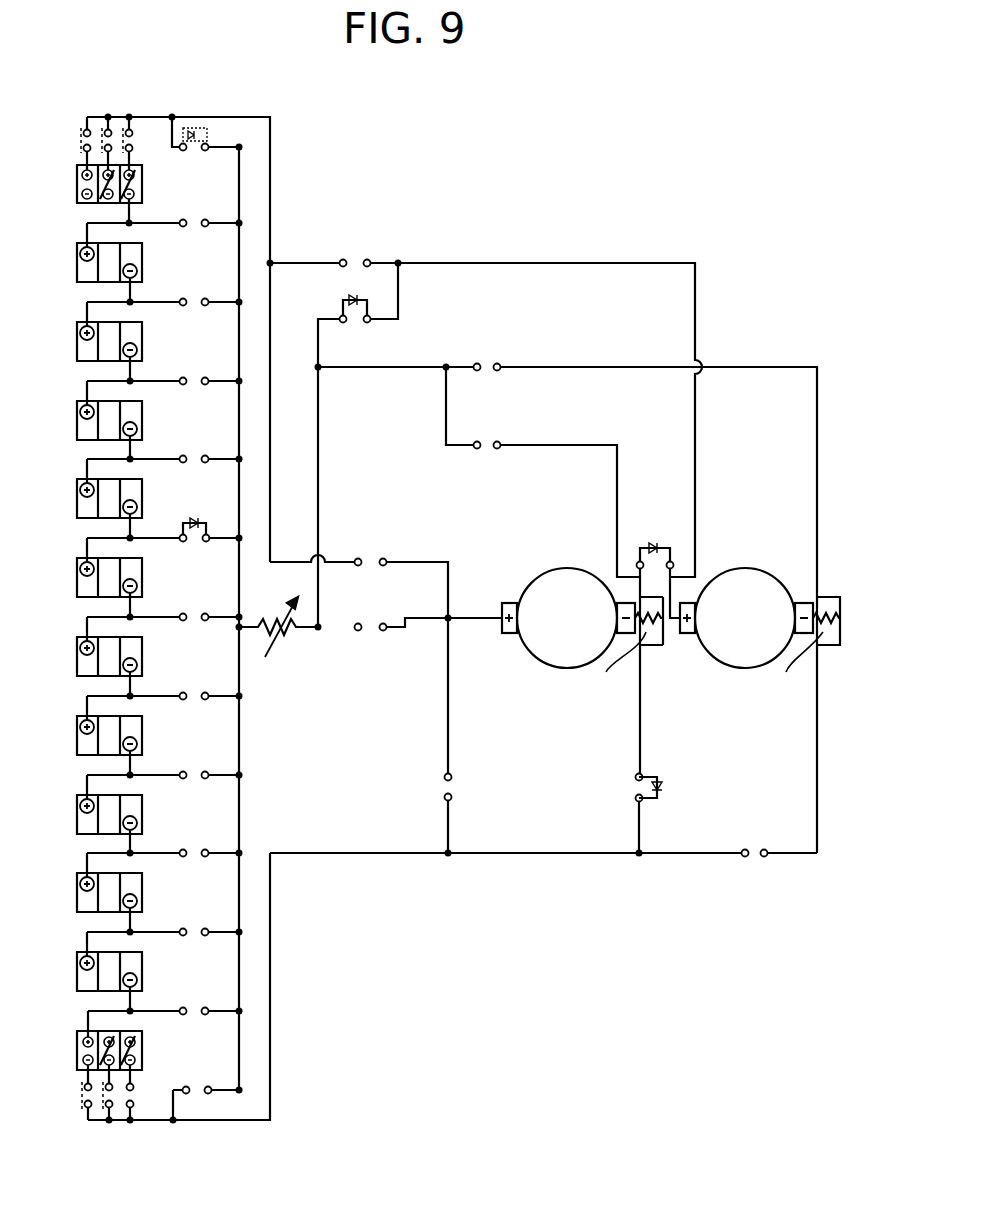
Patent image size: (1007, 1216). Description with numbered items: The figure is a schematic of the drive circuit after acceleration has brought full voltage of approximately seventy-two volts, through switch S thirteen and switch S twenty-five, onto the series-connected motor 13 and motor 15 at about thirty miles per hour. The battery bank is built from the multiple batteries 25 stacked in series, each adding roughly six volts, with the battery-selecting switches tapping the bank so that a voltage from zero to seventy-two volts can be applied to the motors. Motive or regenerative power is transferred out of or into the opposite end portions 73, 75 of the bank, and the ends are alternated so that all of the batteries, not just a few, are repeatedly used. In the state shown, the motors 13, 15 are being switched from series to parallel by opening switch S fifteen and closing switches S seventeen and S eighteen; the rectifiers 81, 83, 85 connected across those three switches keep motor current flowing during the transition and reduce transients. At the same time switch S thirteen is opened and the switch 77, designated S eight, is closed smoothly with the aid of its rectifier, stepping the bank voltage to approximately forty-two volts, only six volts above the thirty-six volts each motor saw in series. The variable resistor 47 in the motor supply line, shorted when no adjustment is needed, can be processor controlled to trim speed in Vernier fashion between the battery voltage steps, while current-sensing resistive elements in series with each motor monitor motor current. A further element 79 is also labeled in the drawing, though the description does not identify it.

The motor 13 is at (534, 654).
The motor 15 is at (761, 568).
The batteries 25 is at (80, 1074).
The variable resistor 47 is at (267, 615).
The end portion of the battery bank 73 is at (538, 630).
The end portion of the battery bank 75 is at (191, 621).
The switch S8 77 is at (212, 525).
The switch S7 79 is at (198, 607).
The rectifier 81 is at (672, 547).
The rectifier 83 is at (370, 322).
The rectifier 85 is at (663, 788).